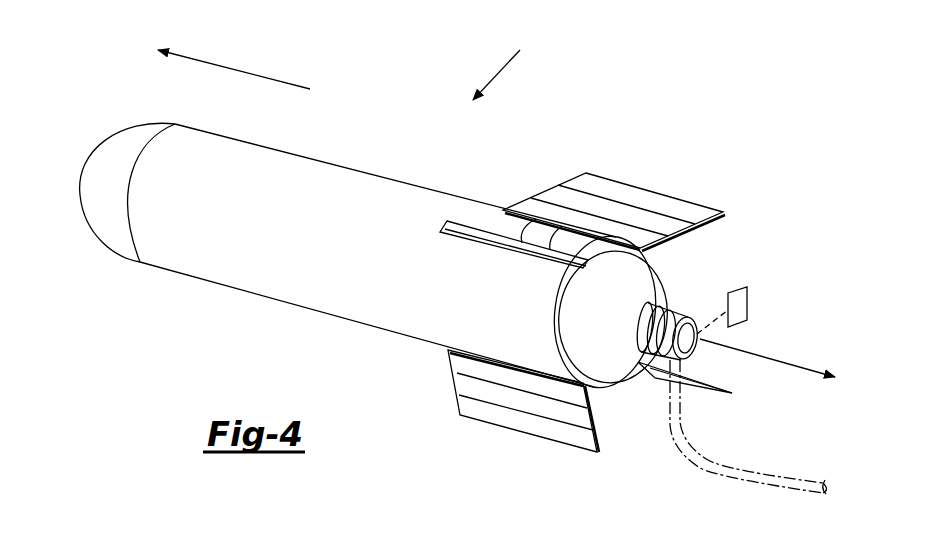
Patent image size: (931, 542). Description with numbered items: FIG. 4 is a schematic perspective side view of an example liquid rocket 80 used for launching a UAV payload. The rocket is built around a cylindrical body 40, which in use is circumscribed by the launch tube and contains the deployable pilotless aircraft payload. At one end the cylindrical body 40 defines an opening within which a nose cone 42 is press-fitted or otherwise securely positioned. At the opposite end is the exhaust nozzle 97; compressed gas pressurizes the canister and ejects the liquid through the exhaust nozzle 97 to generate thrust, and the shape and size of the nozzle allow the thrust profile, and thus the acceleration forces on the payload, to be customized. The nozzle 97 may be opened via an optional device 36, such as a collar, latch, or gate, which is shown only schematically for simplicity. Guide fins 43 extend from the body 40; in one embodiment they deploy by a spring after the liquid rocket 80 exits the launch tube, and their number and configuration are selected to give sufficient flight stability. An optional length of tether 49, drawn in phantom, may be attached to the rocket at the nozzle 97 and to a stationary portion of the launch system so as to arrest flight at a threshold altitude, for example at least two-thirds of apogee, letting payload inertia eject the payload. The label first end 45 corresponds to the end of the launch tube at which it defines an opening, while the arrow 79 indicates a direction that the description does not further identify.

The cylindrical body 40 is at (228, 285).
The nose cone 42 is at (115, 156).
The guide fins 43 is at (670, 205).
The exhaust nozzle 97 is at (690, 318).
The optional device 36 is at (738, 288).
The first end 45 is at (795, 362).
The tether 49 is at (717, 477).
The direction of travel 79 is at (233, 68).
The liquid rocket 80 is at (503, 62).